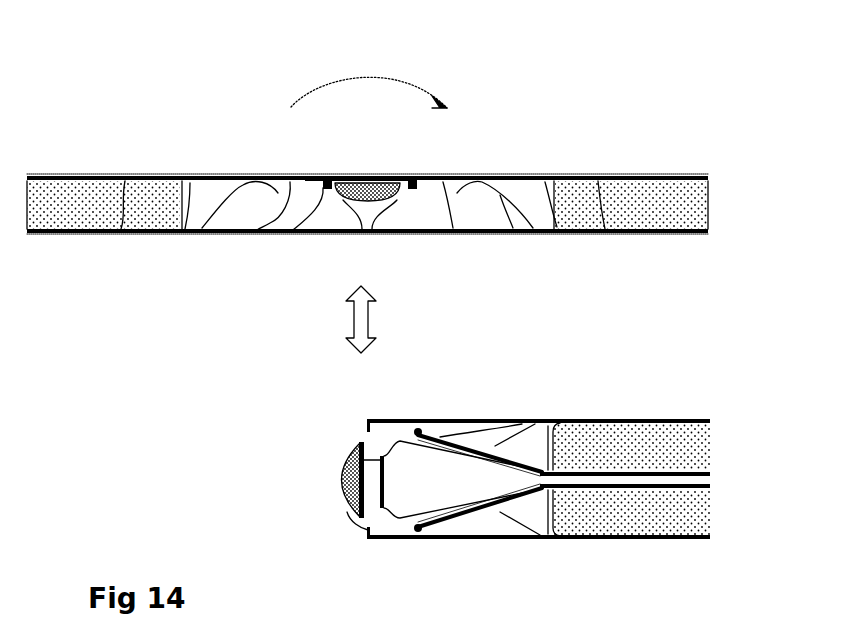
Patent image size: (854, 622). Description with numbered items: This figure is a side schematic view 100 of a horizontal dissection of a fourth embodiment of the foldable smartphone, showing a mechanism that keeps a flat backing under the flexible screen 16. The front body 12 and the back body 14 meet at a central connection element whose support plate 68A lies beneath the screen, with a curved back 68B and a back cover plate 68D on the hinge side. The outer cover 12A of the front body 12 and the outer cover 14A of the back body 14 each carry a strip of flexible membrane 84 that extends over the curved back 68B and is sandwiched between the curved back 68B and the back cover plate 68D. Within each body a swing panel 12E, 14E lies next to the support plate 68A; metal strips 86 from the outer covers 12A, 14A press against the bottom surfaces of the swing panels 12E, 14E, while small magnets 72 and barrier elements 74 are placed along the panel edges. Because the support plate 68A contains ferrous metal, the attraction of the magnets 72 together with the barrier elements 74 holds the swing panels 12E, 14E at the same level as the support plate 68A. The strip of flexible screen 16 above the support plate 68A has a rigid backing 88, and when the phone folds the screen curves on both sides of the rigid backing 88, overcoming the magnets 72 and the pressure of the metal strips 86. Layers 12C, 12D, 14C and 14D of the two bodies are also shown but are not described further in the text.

The side schematic view 100 is at (268, 105).
The flexible screen 16 is at (221, 174).
The front body 12 is at (38, 236).
The outer cover 12A is at (70, 233).
The first layer inner layer 12C is at (118, 233).
The first layer membrane 12D is at (173, 233).
The swing panel 12E is at (250, 233).
The magnet 72 is at (295, 233).
The barrier element 74 is at (416, 428).
The back body 14 is at (693, 236).
The outer cover 14A is at (655, 233).
The second layer inner layer 14C is at (605, 233).
The second layer membrane 14D is at (560, 233).
The swing panel 14E is at (450, 233).
The metal strip 86 is at (507, 233).
The flexible membrane 84 is at (368, 431).
The rigid backing 88 is at (347, 449).
The back cover plate 68D is at (340, 481).
The support plate 68A is at (381, 509).
The curved back 68B is at (347, 527).